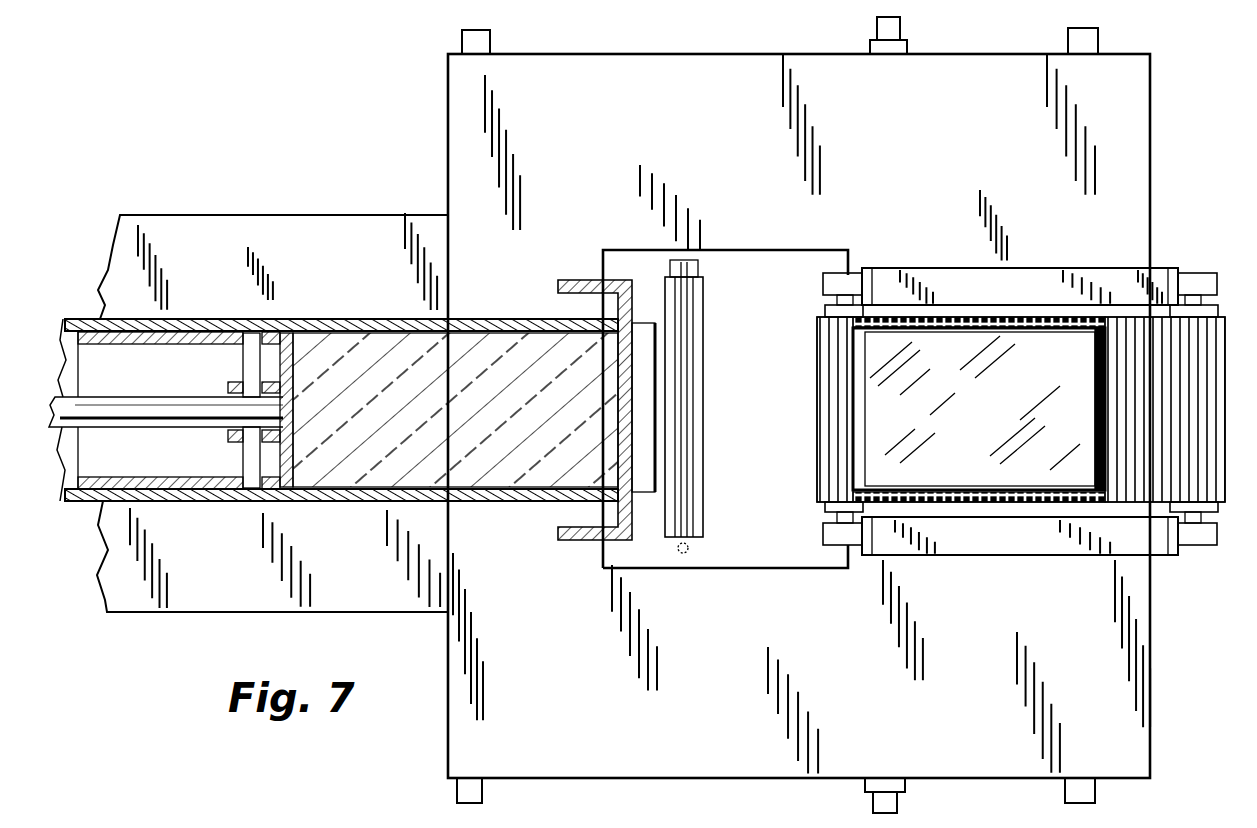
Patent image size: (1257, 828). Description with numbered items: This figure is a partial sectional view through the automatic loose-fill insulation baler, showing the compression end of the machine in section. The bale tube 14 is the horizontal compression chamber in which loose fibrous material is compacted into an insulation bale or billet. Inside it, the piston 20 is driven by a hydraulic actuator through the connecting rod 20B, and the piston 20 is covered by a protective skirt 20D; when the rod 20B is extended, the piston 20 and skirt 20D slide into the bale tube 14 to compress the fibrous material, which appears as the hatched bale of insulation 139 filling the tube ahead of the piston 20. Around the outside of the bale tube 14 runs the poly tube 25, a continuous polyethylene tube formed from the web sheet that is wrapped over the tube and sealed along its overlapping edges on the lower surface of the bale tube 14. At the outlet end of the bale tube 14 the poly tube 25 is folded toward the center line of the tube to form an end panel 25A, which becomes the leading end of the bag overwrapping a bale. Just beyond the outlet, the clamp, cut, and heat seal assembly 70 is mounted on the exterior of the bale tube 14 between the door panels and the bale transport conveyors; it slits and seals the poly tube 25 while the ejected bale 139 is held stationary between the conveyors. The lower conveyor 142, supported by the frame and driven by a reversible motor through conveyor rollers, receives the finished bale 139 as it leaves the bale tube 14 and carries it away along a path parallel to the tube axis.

The bale tube 14 is at (262, 322).
The poly tube 25 is at (190, 318).
The end panel 25A is at (566, 500).
The piston 20 is at (280, 448).
The connecting rod 20B is at (169, 427).
The protective skirt 20D is at (183, 492).
The bale of insulation 139 is at (373, 467).
The lower conveyor 142 is at (1157, 380).
The clamp, cut, and heat seal assembly 70 is at (704, 268).